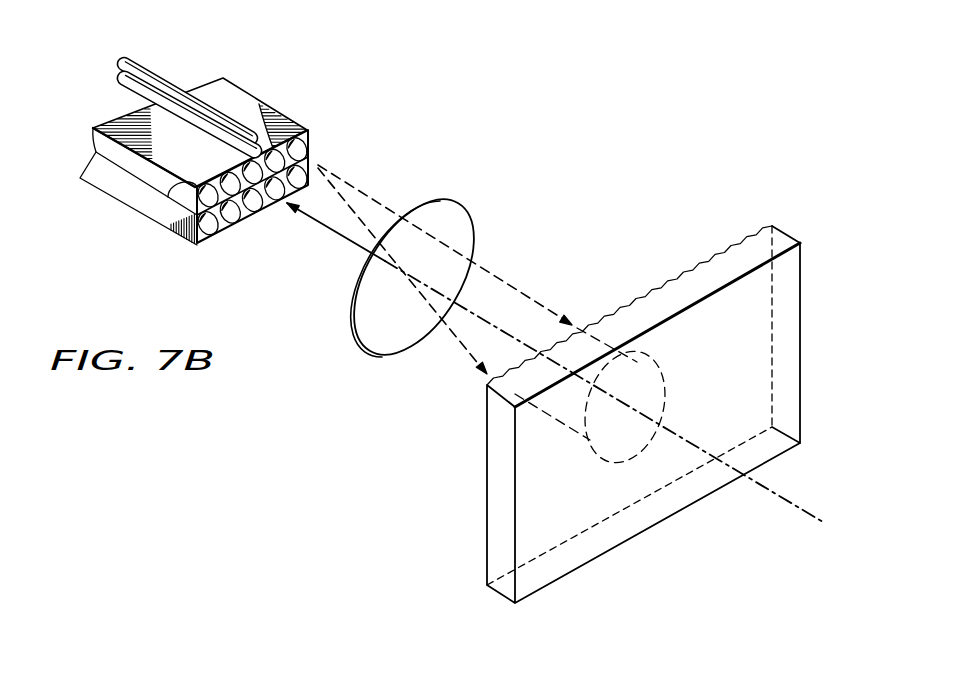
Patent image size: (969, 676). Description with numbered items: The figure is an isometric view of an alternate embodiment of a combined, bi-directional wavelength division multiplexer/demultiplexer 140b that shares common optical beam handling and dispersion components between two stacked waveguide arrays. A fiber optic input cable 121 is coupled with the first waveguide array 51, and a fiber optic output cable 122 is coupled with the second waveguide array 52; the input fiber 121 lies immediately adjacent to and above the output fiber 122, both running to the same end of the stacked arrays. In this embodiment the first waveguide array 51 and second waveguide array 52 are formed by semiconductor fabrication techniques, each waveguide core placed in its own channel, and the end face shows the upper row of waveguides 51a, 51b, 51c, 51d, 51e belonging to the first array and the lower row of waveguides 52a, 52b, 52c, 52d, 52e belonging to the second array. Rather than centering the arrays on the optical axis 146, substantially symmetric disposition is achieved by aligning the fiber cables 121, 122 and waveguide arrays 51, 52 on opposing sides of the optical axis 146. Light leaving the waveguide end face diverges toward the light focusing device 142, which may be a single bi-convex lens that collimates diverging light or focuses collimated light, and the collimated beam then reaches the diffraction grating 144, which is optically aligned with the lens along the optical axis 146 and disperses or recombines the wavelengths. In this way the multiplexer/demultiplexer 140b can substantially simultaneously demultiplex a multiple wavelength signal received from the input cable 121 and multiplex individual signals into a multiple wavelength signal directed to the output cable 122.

The first waveguide array 51 is at (98, 146).
The second waveguide array 52 is at (102, 183).
The waveguide 51a is at (308, 146).
The waveguide 51b is at (279, 126).
The waveguide 51c is at (258, 108).
The waveguide 51d is at (235, 175).
The waveguide 51e is at (170, 225).
The waveguide 52a is at (310, 161).
The waveguide 52b is at (281, 200).
The waveguide 52c is at (258, 208).
The waveguide 52d is at (233, 220).
The waveguide 52e is at (217, 243).
The fiber optic input cable 121 is at (154, 73).
The fiber optic output cable 122 is at (122, 84).
The combined multiplexer/demultiplexer 140b is at (335, 408).
The light focusing device 142 is at (443, 203).
The diffraction grating 144 is at (785, 236).
The optical axis 146 is at (807, 510).